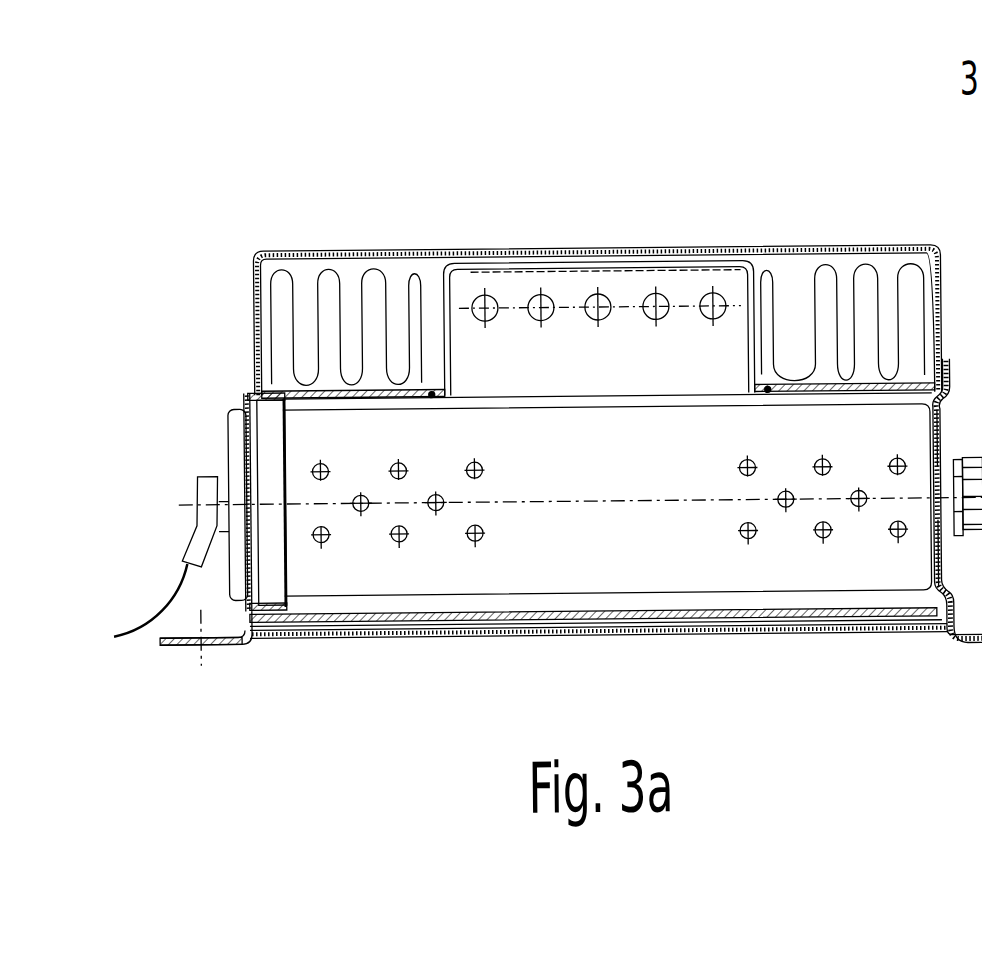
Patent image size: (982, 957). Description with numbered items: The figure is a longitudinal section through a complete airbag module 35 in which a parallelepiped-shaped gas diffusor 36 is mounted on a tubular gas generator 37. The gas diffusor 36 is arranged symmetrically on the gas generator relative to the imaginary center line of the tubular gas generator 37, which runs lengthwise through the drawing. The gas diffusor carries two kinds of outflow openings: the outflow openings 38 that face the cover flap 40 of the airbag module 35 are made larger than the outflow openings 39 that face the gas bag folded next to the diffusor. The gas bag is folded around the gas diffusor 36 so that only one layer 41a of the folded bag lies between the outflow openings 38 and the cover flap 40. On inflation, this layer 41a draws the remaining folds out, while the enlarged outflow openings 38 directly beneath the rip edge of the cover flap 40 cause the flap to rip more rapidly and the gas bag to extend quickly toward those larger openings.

The airbag module 35 is at (385, 641).
The gas diffusor 36 is at (498, 278).
The tubular gas generator 37 is at (793, 560).
The outflow openings 38 is at (703, 259).
The outflow openings 39 is at (661, 292).
The cover flap 40 is at (820, 250).
The layer of the folded gas bag 41a is at (447, 262).